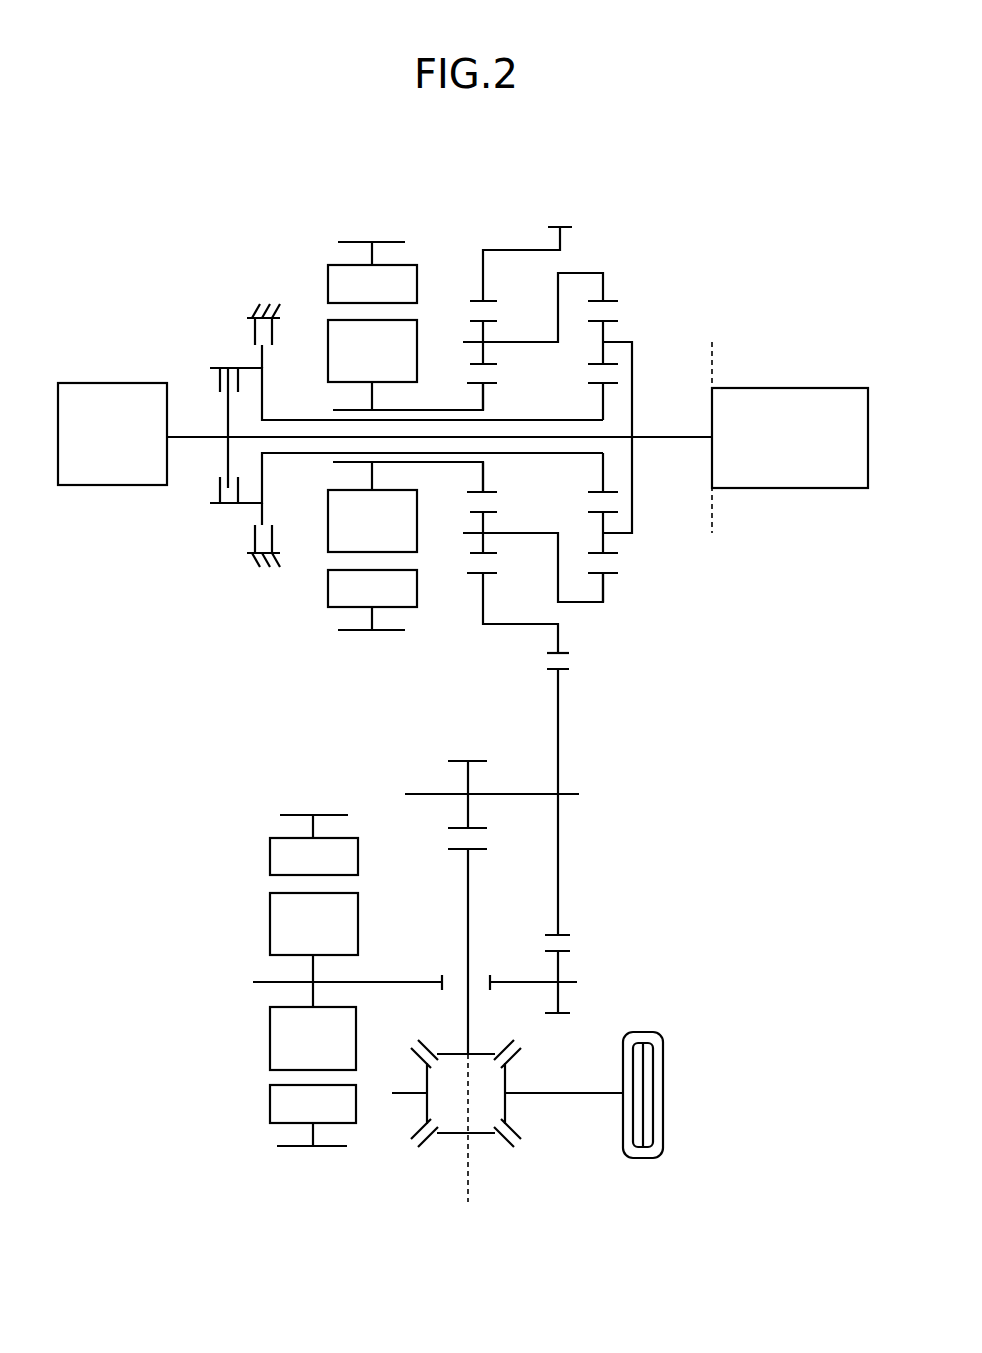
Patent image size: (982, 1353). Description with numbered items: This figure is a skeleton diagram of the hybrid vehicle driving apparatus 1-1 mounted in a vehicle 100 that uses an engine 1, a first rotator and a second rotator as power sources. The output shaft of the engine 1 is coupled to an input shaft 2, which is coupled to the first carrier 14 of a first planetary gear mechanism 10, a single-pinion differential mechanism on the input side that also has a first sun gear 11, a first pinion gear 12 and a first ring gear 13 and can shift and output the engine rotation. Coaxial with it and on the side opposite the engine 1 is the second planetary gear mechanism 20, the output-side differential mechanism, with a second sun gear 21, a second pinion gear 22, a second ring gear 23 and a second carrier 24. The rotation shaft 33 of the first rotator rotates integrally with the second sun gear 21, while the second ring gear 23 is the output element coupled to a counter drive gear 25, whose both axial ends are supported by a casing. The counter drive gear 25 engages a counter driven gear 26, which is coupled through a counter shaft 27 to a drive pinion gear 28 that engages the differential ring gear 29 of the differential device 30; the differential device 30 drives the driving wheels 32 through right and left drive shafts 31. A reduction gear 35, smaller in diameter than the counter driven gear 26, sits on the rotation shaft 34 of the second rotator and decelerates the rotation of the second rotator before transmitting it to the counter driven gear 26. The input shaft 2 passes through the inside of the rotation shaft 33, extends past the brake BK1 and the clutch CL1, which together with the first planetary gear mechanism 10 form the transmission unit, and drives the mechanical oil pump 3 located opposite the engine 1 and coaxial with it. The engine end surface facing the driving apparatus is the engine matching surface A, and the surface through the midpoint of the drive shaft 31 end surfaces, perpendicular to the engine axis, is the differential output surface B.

The hybrid vehicle driving apparatus 1-1 is at (582, 190).
The vehicle 100 is at (303, 218).
The engine 1 is at (800, 388).
The input shaft 2 is at (672, 437).
The mechanical oil pump 3 is at (118, 384).
The first planetary gear mechanism 10 is at (619, 279).
The first sun gear 11 is at (595, 378).
The first pinion gear 12 is at (595, 362).
The first ring gear 13 is at (620, 303).
The first carrier 14 is at (634, 372).
The second planetary gear mechanism 20 is at (468, 279).
The second sun gear 21 is at (476, 378).
The second pinion gear 22 is at (476, 362).
The second ring gear 23 is at (476, 302).
The second carrier 24 is at (527, 341).
The counter drive gear 25 is at (568, 662).
The counter driven gear 26 is at (547, 664).
The counter shaft 27 is at (514, 793).
The drive pinion gear 28 is at (476, 760).
The differential ring gear 29 is at (485, 848).
The differential device 30 is at (492, 1032).
The drive shaft 31 is at (393, 1093).
The driving wheel 32 is at (640, 1032).
The rotation shaft of the first rotator MG1 33 is at (378, 409).
The rotation shaft of the second rotator MG2 34 is at (405, 980).
The reduction gear 35 is at (565, 948).
The clutch CL1 is at (221, 358).
The brake BK1 is at (255, 288).
The engine matching surface A is at (711, 518).
The differential output surface B is at (470, 1183).